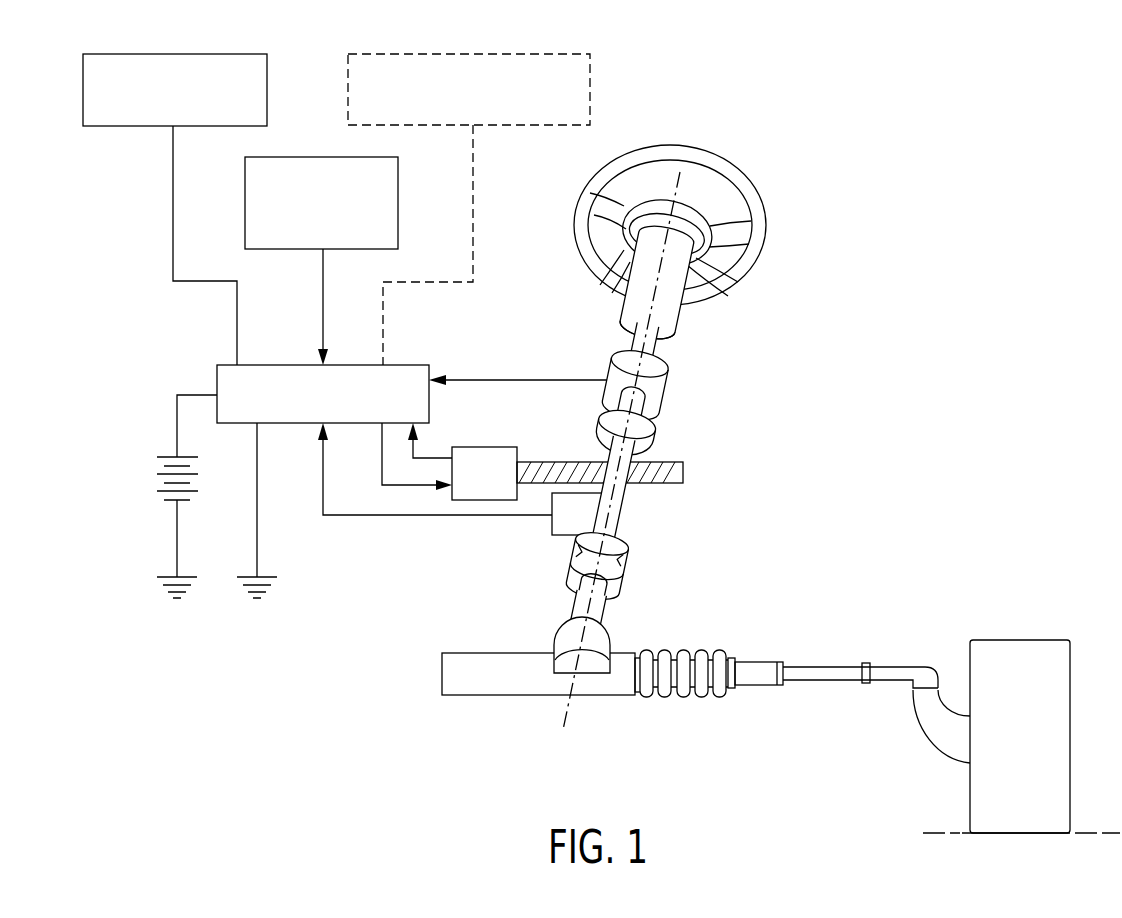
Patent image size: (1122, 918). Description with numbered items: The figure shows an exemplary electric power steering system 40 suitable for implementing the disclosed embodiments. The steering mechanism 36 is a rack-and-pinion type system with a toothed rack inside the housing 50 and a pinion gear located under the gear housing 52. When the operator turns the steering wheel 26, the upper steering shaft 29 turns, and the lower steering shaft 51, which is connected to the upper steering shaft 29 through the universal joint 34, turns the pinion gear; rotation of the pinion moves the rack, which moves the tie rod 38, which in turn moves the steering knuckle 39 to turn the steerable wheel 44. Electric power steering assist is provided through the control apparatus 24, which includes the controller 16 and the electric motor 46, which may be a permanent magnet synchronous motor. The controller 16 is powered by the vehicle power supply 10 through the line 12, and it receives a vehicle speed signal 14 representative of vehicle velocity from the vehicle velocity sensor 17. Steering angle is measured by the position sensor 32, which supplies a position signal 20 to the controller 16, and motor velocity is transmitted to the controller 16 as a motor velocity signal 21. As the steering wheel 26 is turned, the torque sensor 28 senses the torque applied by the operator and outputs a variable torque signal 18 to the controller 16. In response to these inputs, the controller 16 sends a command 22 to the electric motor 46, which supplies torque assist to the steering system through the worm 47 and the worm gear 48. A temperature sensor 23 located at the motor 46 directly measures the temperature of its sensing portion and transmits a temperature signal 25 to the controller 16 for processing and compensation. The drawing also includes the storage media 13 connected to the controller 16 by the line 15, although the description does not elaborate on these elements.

The vehicle power supply 10 is at (165, 480).
The line 12 is at (191, 393).
The storage media 13 is at (113, 127).
The vehicle speed signal 14 is at (322, 266).
The storage media connection line 15 is at (173, 190).
The controller 16 is at (293, 365).
The vehicle velocity sensor 17 is at (322, 157).
The torque signal 18 is at (531, 378).
The position signal 20 is at (437, 516).
The motor velocity signal 21 is at (437, 458).
The command 22 is at (398, 487).
The temperature sensor 23 is at (590, 102).
The control apparatus 24 is at (858, 363).
The temperature signal 25 is at (473, 185).
The steering wheel 26 is at (723, 177).
The torque sensor 28 is at (635, 385).
The upper steering shaft 29 is at (599, 338).
The position sensor 32 is at (552, 527).
The universal joint 34 is at (597, 566).
The steering mechanism 36 is at (710, 646).
The tie rod 38 is at (821, 681).
The steering knuckle 39 is at (940, 726).
The electric power steering system 40 is at (935, 459).
The steerable wheel 44 is at (1007, 653).
The electric motor 46 is at (492, 447).
The worm 47 is at (674, 476).
The worm gear 48 is at (626, 433).
The housing 50 is at (481, 686).
The lower steering shaft 51 is at (589, 608).
The gear housing 52 is at (562, 634).